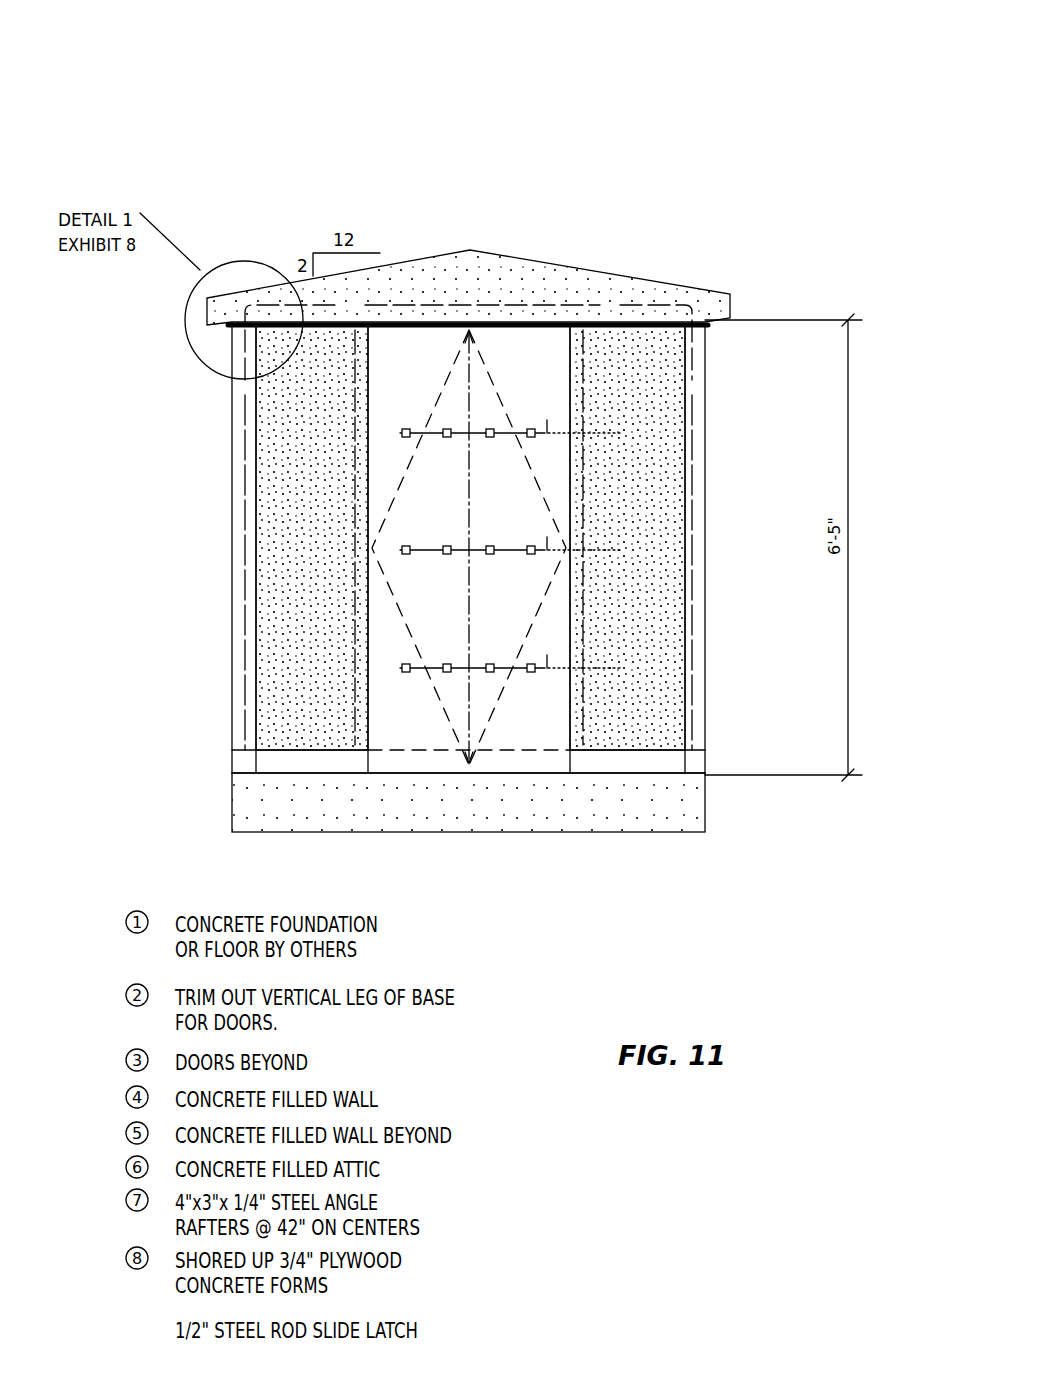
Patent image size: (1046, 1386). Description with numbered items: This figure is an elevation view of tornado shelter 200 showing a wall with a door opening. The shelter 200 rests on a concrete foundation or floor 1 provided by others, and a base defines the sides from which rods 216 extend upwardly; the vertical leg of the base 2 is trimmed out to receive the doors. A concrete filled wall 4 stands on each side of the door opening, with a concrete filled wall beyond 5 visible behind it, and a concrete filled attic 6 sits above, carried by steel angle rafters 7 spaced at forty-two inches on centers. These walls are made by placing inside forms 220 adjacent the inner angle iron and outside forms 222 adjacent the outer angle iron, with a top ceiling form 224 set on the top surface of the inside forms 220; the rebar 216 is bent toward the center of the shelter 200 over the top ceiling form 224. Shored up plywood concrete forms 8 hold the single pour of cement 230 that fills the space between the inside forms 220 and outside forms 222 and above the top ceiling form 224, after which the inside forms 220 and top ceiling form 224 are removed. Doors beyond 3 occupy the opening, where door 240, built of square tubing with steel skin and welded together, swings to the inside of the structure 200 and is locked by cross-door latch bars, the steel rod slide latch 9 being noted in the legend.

The tornado shelter 200 is at (460, 669).
The rods 216 is at (228, 549).
The inside forms 220 is at (690, 457).
The outside forms 222 is at (708, 632).
The top ceiling form 224 is at (548, 400).
The cement 230 is at (470, 294).
The door 240 is at (373, 834).
The concrete foundation or floor 1 is at (222, 806).
The trimmed vertical leg of base 2 is at (405, 756).
The doors beyond 3 is at (469, 547).
The concrete filled wall 4 is at (222, 561).
The concrete filled wall beyond 5 is at (300, 427).
The concrete filled attic 6 is at (421, 292).
The steel angle rafters 7 is at (538, 265).
The shored up plywood concrete forms 8 is at (540, 330).
The steel rod slide latch 9 is at (528, 722).